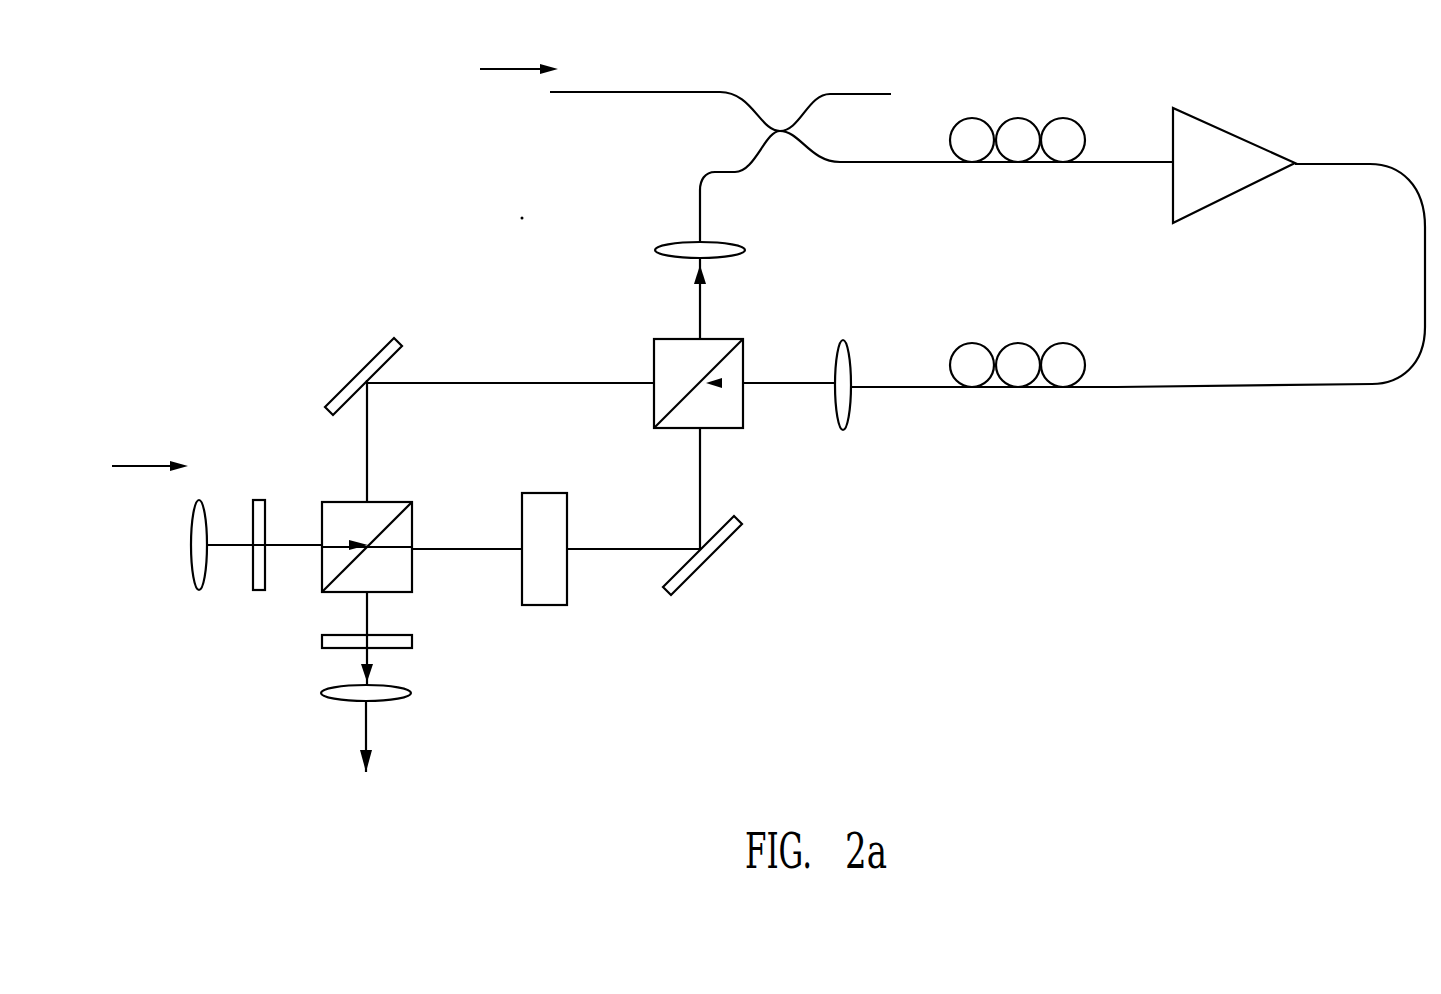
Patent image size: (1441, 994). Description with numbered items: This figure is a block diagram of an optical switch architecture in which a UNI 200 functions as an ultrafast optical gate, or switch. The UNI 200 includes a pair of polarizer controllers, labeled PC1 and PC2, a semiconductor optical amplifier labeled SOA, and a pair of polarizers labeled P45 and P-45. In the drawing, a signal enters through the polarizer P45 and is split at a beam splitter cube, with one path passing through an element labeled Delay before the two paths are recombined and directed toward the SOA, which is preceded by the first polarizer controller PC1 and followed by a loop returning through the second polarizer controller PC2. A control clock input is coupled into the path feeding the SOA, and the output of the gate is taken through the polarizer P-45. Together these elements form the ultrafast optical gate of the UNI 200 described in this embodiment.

The UNI 200 is at (768, 390).
The polarizer controller PC1 is at (1024, 113).
The polarizer controller PC2 is at (1022, 341).
The semiconductor optical amplifier SOA is at (1234, 165).
The optical delay Delay is at (544, 522).
The polarizer P45 is at (261, 525).
The polarizer P-45 is at (411, 646).